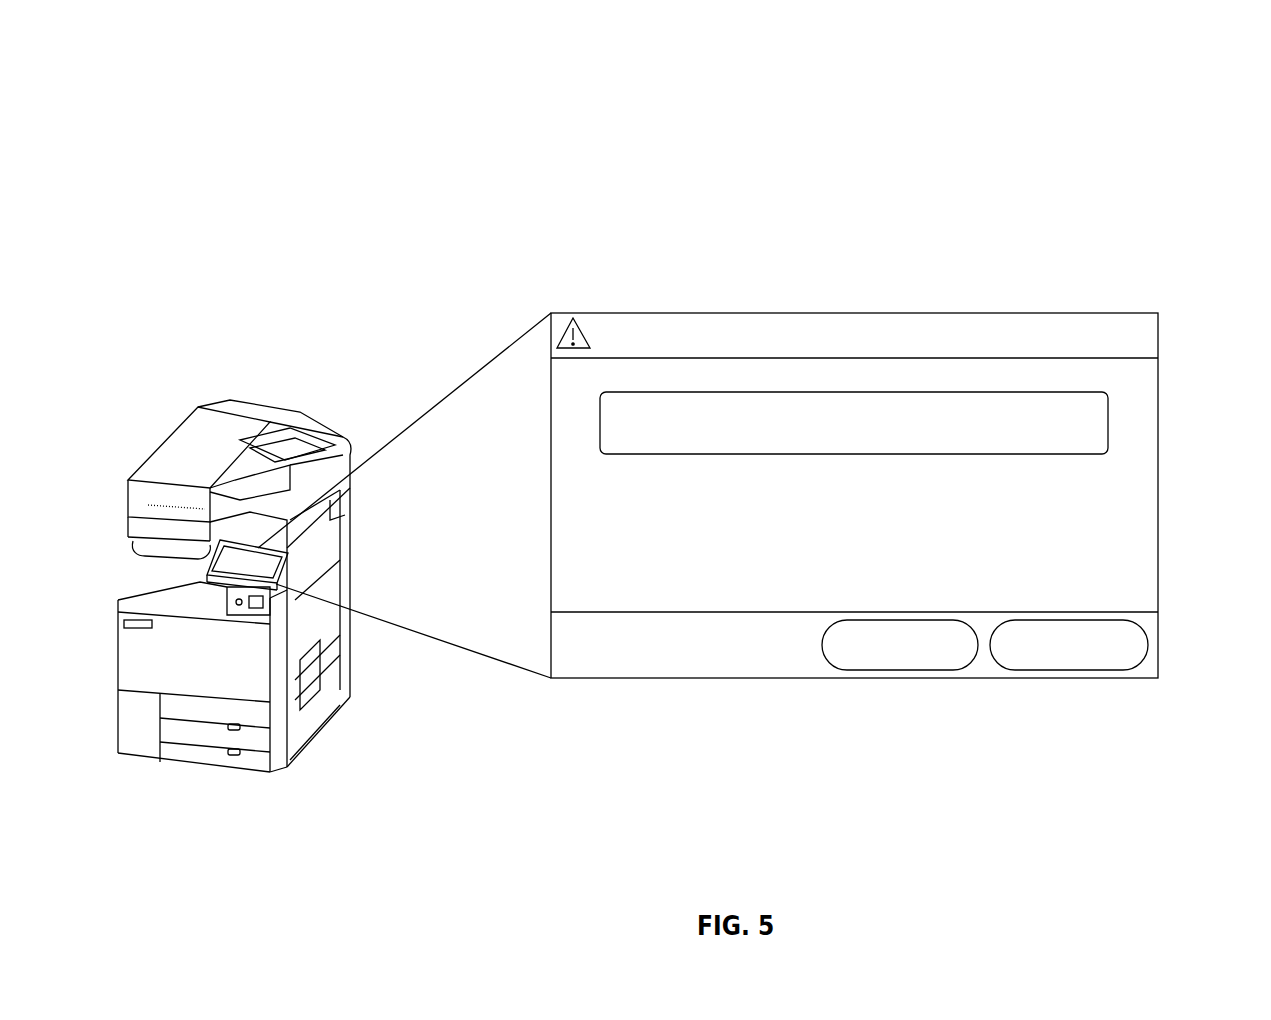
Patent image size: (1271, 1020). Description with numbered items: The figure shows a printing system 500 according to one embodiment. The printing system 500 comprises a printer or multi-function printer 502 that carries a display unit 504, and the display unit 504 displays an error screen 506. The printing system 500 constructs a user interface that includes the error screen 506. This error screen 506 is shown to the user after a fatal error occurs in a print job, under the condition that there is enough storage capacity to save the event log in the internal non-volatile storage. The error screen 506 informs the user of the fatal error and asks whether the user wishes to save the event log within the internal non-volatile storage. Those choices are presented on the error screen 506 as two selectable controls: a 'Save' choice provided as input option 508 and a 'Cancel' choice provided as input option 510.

The printing system 500 is at (918, 78).
The multi-function printer 502 is at (253, 814).
The display unit 504 is at (228, 578).
The error screen 506 is at (1158, 380).
The input option 508 is at (873, 671).
The input option 510 is at (1060, 671).